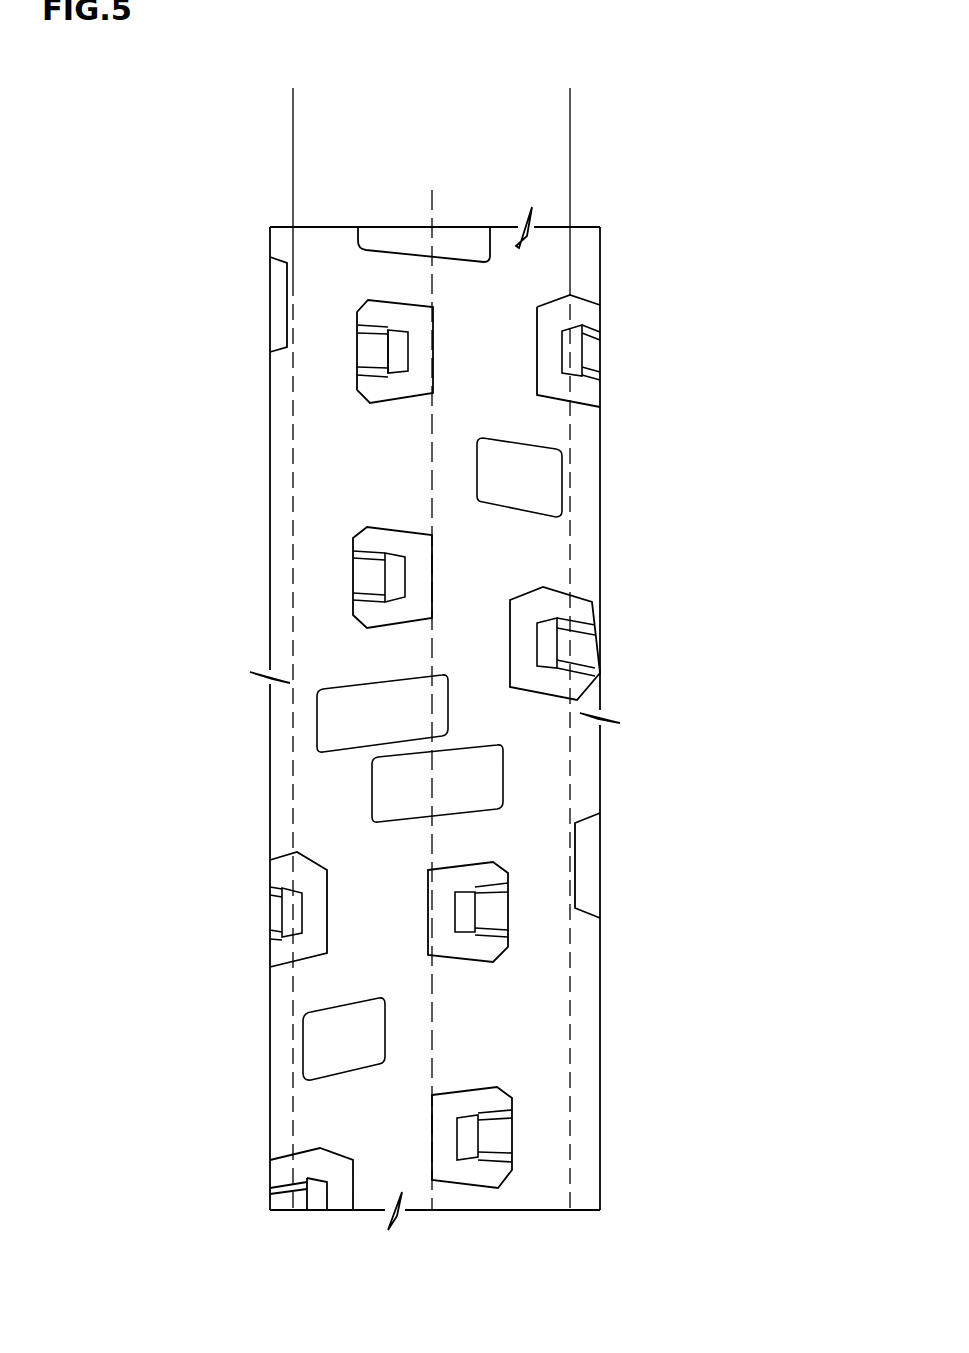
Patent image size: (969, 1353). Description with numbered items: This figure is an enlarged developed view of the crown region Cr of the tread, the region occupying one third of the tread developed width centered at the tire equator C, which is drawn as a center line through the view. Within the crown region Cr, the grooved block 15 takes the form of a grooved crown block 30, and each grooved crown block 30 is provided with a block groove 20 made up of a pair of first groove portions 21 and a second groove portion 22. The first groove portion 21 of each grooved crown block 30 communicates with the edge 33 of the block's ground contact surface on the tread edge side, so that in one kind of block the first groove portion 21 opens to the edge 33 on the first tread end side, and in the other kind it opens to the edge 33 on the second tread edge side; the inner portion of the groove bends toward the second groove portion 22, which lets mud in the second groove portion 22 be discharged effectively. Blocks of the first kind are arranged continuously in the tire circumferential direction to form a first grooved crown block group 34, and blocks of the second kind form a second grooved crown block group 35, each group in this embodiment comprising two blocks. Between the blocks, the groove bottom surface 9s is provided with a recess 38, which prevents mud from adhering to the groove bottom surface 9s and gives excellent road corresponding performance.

The crown region Cr is at (558, 100).
The groove bottom surface 9s is at (335, 257).
The tire equator C is at (432, 686).
The grooved block 15 is at (392, 300).
The block groove 20 is at (170, 346).
The first groove portion 21 is at (375, 332).
The second groove portion 22 is at (376, 355).
The grooved crown block 30 is at (430, 332).
The edge of the ground contact surface 33 is at (357, 343).
The first grooved crown block group 34 is at (745, 270).
The second grooved crown block group 35 is at (745, 957).
The recess 38 is at (537, 487).